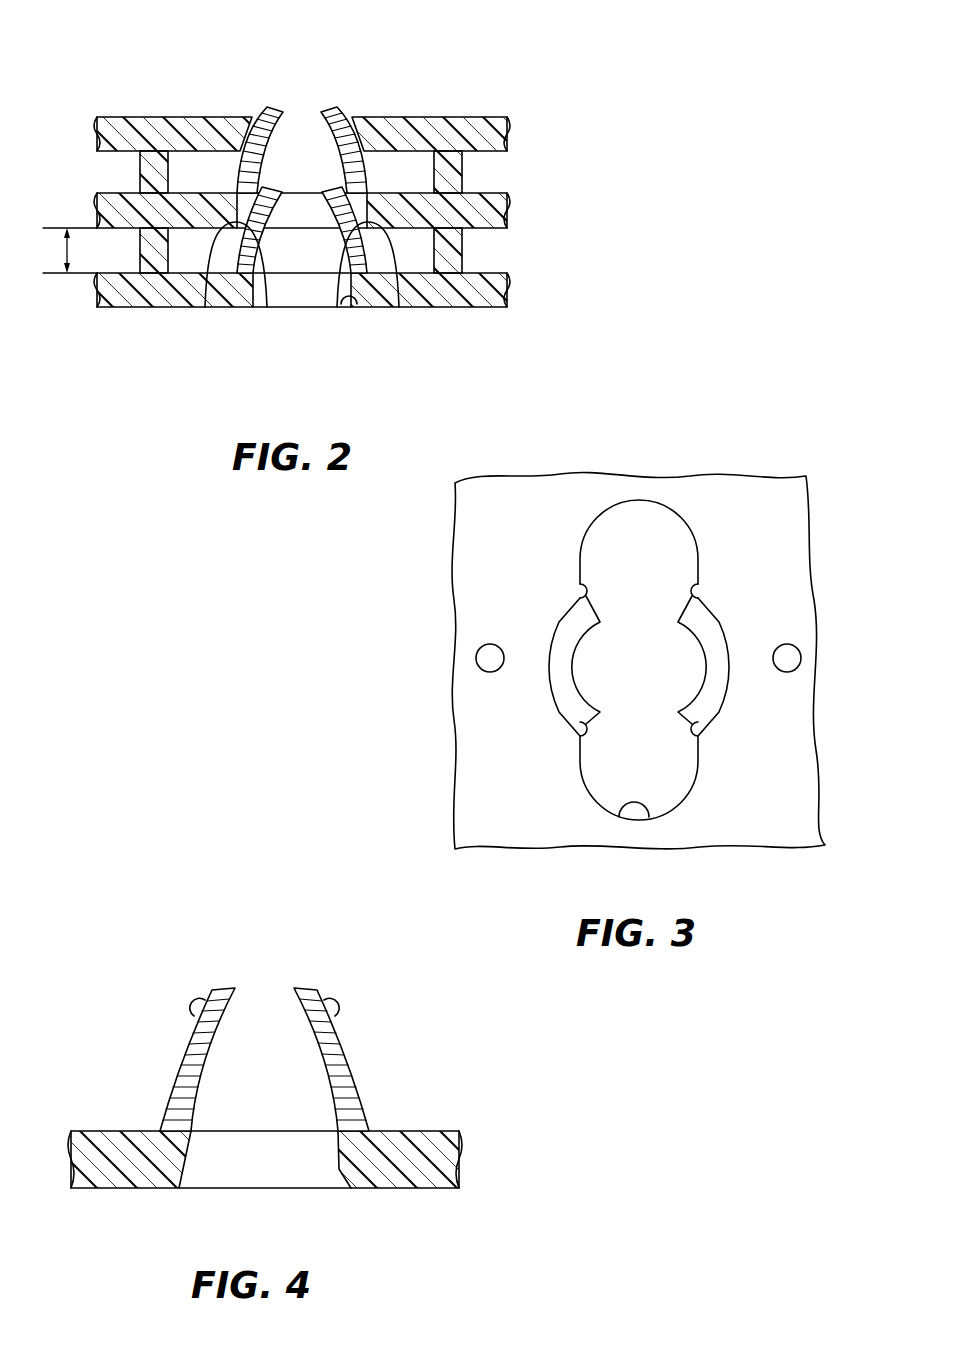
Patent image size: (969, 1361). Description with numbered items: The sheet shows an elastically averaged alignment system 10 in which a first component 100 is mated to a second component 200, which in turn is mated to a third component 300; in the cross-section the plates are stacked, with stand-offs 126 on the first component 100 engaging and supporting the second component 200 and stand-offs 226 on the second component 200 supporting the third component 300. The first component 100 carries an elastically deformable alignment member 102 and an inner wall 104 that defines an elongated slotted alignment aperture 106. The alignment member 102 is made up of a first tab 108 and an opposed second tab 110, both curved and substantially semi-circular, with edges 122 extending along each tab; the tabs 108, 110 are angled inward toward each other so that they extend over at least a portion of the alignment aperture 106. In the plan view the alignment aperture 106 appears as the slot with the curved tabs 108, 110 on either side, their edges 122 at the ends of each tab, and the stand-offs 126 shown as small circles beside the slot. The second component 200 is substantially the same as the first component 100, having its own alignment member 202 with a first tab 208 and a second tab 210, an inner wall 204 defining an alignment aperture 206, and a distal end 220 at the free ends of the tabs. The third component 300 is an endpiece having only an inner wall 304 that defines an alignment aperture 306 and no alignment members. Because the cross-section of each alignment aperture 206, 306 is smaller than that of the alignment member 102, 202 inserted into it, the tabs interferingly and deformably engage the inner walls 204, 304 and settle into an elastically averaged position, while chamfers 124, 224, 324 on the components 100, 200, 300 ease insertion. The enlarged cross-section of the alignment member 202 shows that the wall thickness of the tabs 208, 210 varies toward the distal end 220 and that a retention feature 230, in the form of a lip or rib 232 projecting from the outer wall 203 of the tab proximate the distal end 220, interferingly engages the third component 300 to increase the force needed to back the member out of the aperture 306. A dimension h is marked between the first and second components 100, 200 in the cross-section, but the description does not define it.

In FIG. 2, the elastically averaged alignment system 10 is at (584, 75).
In FIG. 2, the first component 100 is at (512, 290).
In FIG. 2, the elastically deformable alignment member 102 is at (366, 238).
In FIG. 3, the elastically deformable alignment member 102 is at (538, 681).
In FIG. 2, the inner wall 104 is at (350, 306).
In FIG. 3, the inner wall 104 is at (636, 818).
In FIG. 2, the alignment aperture 106 is at (293, 302).
In FIG. 3, the alignment aperture 106 is at (649, 535).
In FIG. 2, the first tab 108 is at (267, 312).
In FIG. 3, the first tab 108 is at (560, 652).
In FIG. 2, the second tab 110 is at (334, 312).
In FIG. 3, the second tab 110 is at (718, 652).
In FIG. 3, the edges 122 is at (579, 590).
In FIG. 2, the chamfer 124 is at (253, 318).
In FIG. 2, the stand-offs 126 is at (139, 264).
In FIG. 3, the stand-offs 126 is at (476, 657).
In FIG. 2, the second component 200 is at (512, 210).
In FIG. 4, the second component 200 is at (466, 1152).
In FIG. 2, the elastically deformable alignment member 202 is at (374, 154).
In FIG. 4, the elastically deformable alignment member 202 is at (296, 966).
In FIG. 4, the outer wall 203 is at (177, 1056).
In FIG. 2, the inner wall 204 is at (268, 187).
In FIG. 2, the alignment aperture 206 is at (306, 225).
In FIG. 4, the alignment aperture 206 is at (263, 1174).
In FIG. 2, the first tab 208 is at (262, 127).
In FIG. 4, the first tab 208 is at (179, 1097).
In FIG. 2, the second tab 210 is at (333, 112).
In FIG. 4, the second tab 210 is at (349, 1095).
In FIG. 4, the distal end 220 is at (224, 972).
In FIG. 2, the chamfer 224 is at (203, 308).
In FIG. 4, the chamfer 224 is at (337, 1176).
In FIG. 2, the stand-offs 226 is at (140, 168).
In FIG. 4, the retention feature 230 is at (189, 981).
In FIG. 4, the retention rib 232 is at (191, 1010).
In FIG. 2, the third component 300 is at (512, 133).
In FIG. 2, the inner wall 304 is at (353, 133).
In FIG. 2, the alignment aperture 306 is at (302, 130).
In FIG. 2, the chamfer 324 is at (239, 121).
In FIG. 2, the panel gap height h is at (70, 250).